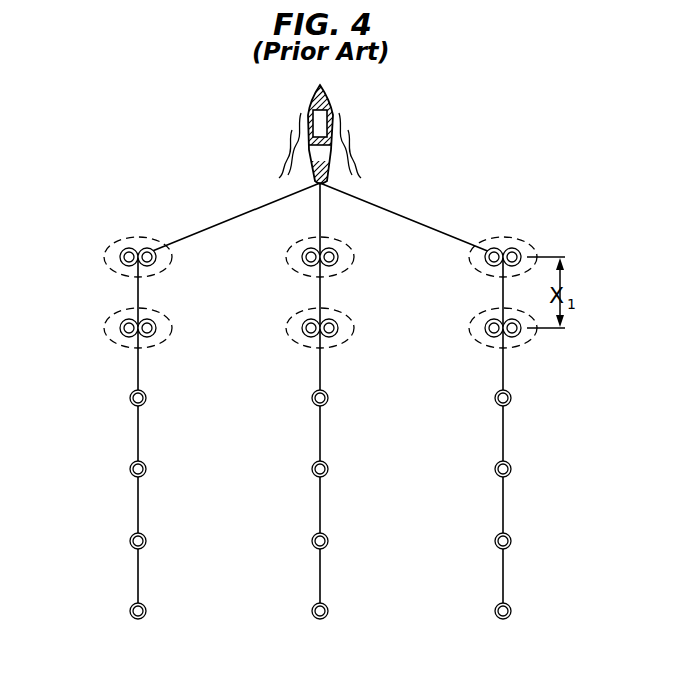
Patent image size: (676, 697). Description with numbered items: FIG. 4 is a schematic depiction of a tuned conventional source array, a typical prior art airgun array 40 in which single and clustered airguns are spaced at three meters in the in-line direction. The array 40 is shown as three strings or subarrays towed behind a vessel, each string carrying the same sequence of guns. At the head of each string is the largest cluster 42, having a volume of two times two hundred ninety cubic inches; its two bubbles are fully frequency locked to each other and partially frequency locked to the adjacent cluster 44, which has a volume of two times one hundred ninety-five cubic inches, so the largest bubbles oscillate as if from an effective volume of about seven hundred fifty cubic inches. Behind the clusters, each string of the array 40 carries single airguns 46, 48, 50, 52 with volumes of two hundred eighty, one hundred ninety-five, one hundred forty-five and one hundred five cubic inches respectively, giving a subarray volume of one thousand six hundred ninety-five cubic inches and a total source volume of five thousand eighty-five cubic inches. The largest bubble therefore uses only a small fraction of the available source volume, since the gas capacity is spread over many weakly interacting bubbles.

The airgun array 40 is at (445, 198).
The largest cluster 42 is at (109, 268).
The adjacent cluster 44 is at (109, 339).
The single airgun 46 is at (131, 401).
The single airgun 48 is at (131, 472).
The single airgun 50 is at (131, 544).
The single airgun 52 is at (131, 614).